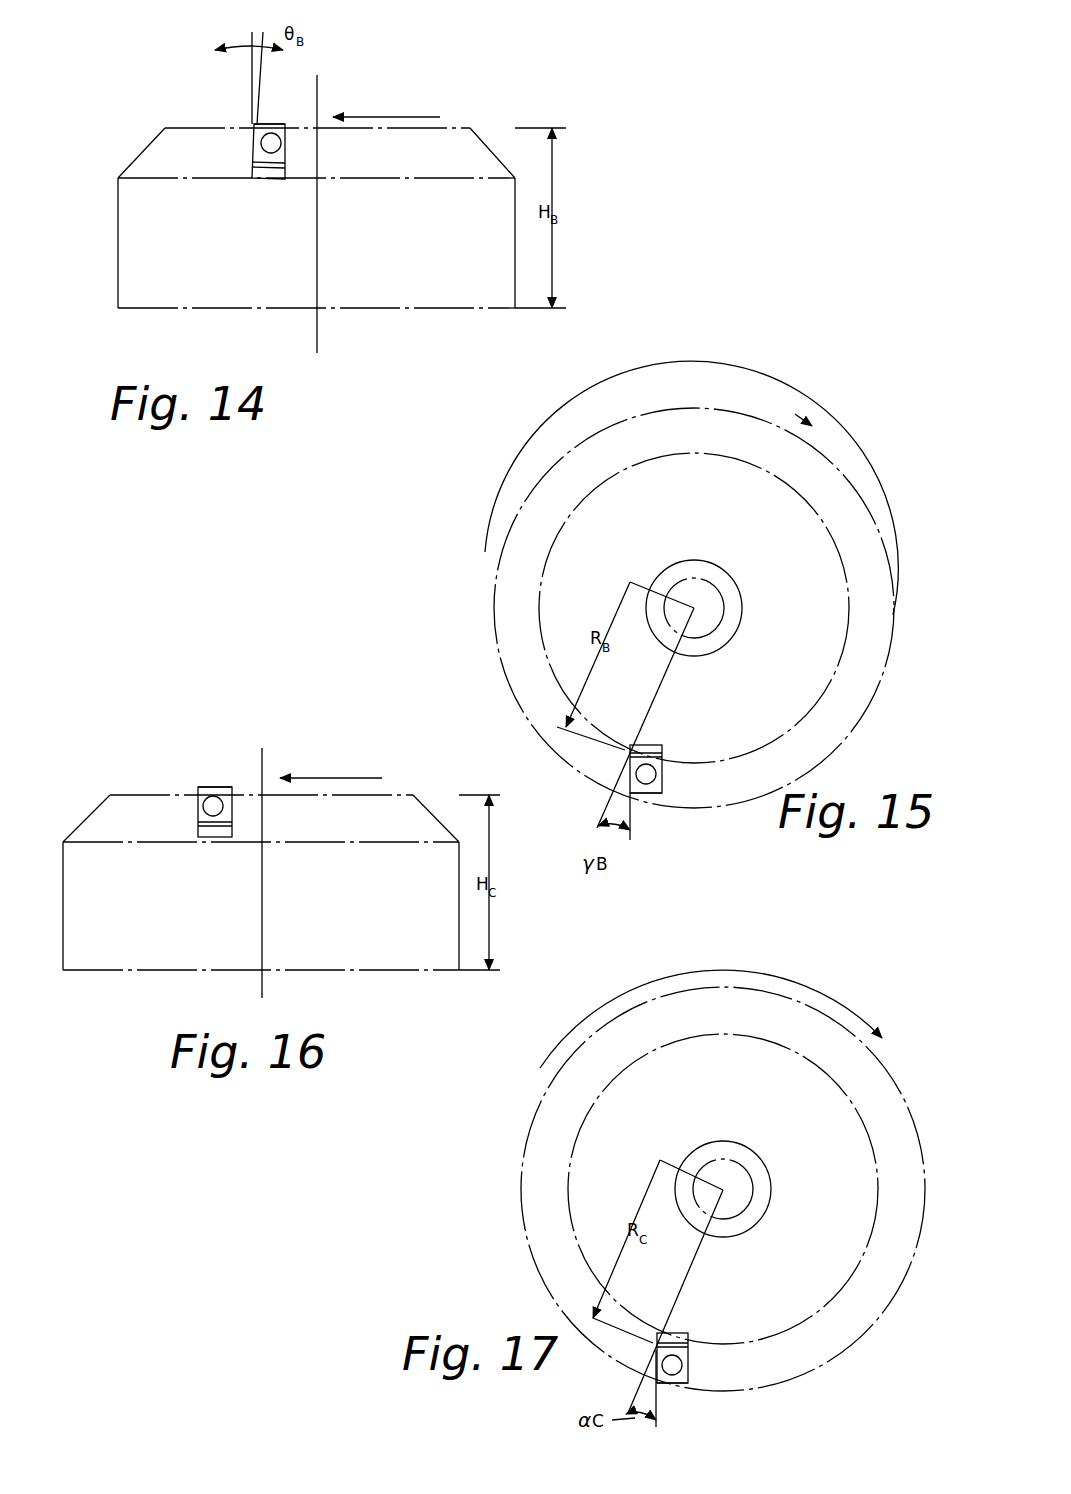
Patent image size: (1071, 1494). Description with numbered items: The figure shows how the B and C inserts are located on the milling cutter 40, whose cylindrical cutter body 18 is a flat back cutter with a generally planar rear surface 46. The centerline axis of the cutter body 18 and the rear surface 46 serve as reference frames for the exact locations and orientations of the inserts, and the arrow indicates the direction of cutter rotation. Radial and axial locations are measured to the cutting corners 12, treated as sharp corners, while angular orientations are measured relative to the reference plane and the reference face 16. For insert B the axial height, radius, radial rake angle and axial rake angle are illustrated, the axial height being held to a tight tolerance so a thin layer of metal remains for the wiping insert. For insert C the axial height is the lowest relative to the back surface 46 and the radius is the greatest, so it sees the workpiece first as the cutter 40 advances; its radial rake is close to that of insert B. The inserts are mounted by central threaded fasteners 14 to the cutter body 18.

In FIG. 14, the cutting corner 12 is at (259, 122).
In FIG. 15, the cutting corner 12 is at (630, 757).
In FIG. 16, the cutting corner 12 is at (198, 800).
In FIG. 17, the cutting corner 12 is at (657, 1345).
In FIG. 14, the cutting insert 14 is at (277, 157).
In FIG. 15, the cutting insert 14 is at (662, 752).
In FIG. 16, the cutting insert 14 is at (223, 797).
In FIG. 17, the cutting insert 14 is at (683, 1350).
In FIG. 14, the reference face 16 is at (254, 150).
In FIG. 15, the reference face 16 is at (650, 803).
In FIG. 16, the reference face 16 is at (198, 810).
In FIG. 17, the reference face 16 is at (653, 1368).
In FIG. 14, the cylindrical cutter body 18 is at (118, 256).
In FIG. 15, the cylindrical cutter body 18 is at (860, 563).
In FIG. 16, the cylindrical cutter body 18 is at (113, 947).
In FIG. 17, the cylindrical cutter body 18 is at (887, 1097).
In FIG. 14, the milling cutter 40 is at (458, 124).
In FIG. 15, the milling cutter 40 is at (880, 508).
In FIG. 16, the milling cutter 40 is at (387, 794).
In FIG. 17, the milling cutter 40 is at (864, 1007).
In FIG. 14, the rear surface 46 is at (212, 308).
In FIG. 16, the rear surface 46 is at (167, 970).